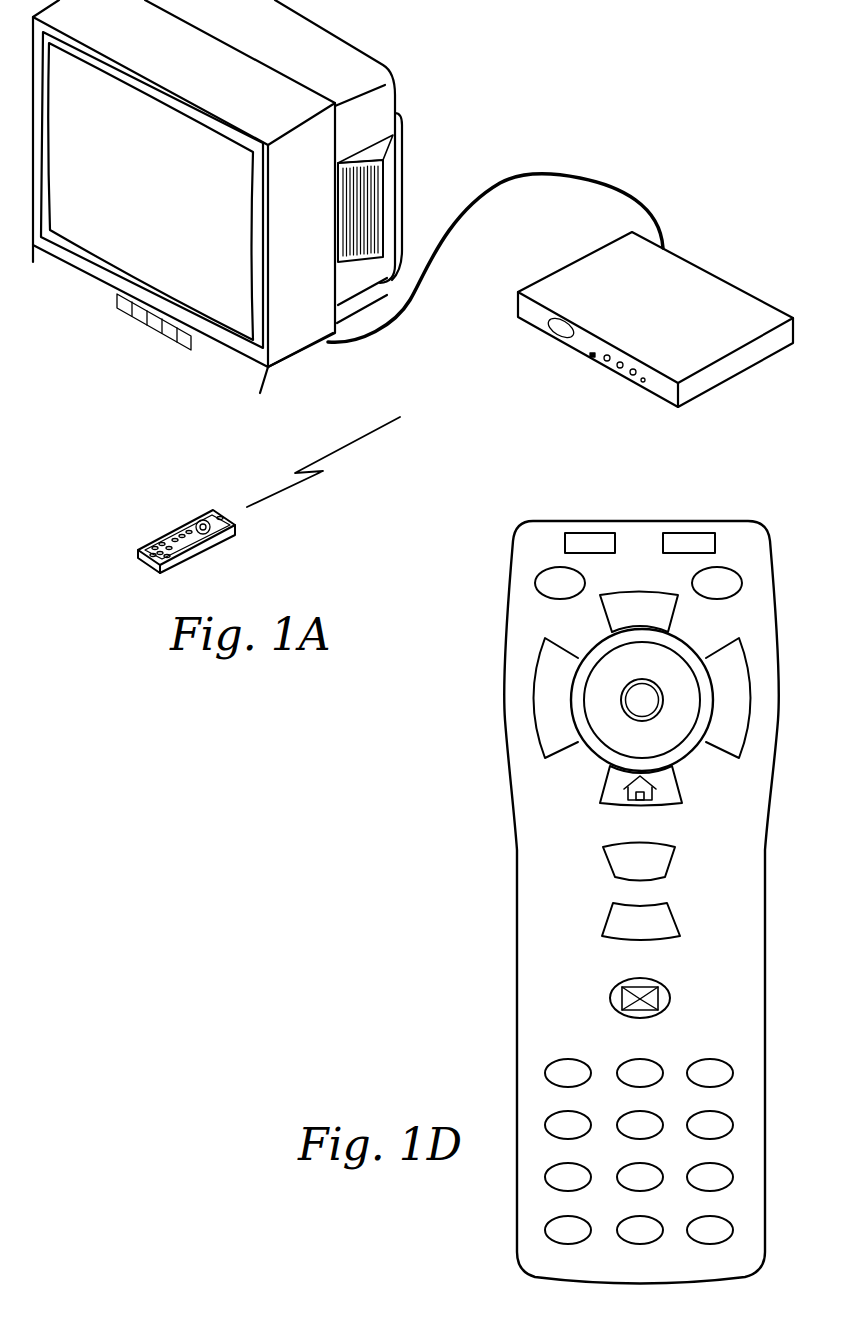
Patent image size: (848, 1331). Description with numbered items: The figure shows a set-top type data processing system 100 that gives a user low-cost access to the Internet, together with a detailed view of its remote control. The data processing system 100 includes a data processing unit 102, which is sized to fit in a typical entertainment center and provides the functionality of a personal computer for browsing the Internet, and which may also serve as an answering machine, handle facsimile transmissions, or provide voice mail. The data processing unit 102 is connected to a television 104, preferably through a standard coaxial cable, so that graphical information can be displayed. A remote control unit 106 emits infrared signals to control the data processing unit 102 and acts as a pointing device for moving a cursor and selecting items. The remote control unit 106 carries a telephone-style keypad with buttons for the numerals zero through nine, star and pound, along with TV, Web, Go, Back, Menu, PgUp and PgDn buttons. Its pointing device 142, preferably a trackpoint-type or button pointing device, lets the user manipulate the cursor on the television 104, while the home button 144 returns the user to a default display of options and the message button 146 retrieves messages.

In FIG. 1A, the data processing system 100 is at (523, 429).
In FIG. 1A, the data processing unit 102 is at (707, 268).
In FIG. 1A, the television 104 is at (350, 40).
In FIG. 1A, the remote control unit 106 is at (180, 525).
In FIG. 1D, the remote control unit 106 is at (723, 521).
In FIG. 1D, the pointing device 142 is at (652, 668).
In FIG. 1D, the home button 144 is at (672, 806).
In FIG. 1D, the message button 146 is at (670, 1003).